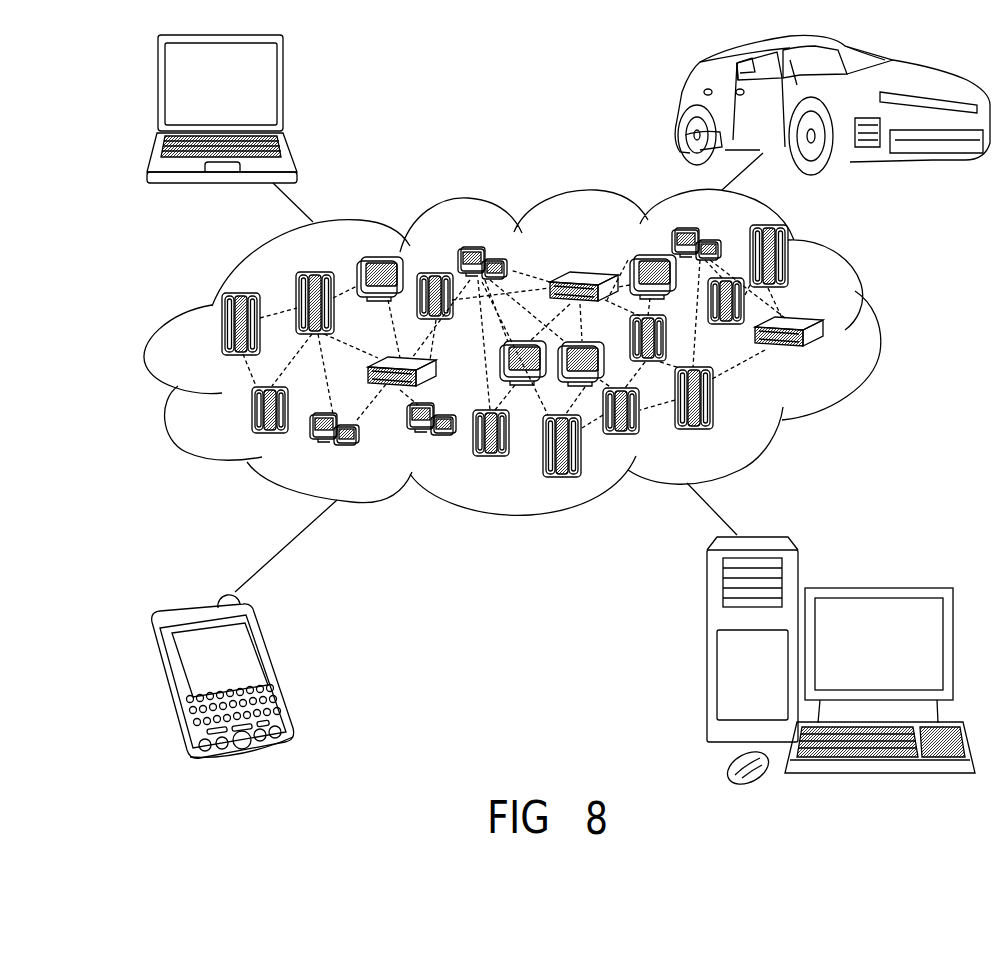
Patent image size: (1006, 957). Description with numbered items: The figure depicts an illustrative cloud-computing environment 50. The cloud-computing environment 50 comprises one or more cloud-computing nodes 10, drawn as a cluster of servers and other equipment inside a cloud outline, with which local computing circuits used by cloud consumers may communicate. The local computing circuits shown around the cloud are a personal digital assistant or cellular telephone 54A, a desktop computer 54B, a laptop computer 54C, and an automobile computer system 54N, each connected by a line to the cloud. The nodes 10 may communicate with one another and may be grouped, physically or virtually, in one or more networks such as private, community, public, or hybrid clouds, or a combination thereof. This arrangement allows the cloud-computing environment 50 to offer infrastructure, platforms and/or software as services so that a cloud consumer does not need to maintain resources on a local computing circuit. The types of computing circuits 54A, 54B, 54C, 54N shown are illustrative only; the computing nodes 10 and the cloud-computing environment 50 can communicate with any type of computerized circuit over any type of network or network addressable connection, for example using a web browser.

The cloud-computing node 10 is at (826, 359).
The cloud-computing environment 50 is at (882, 333).
The personal digital assistant (PDA) or cellular telephone 54A is at (275, 670).
The desktop computer 54B is at (877, 587).
The laptop computer 54C is at (283, 92).
The automobile computer system 54N is at (678, 105).